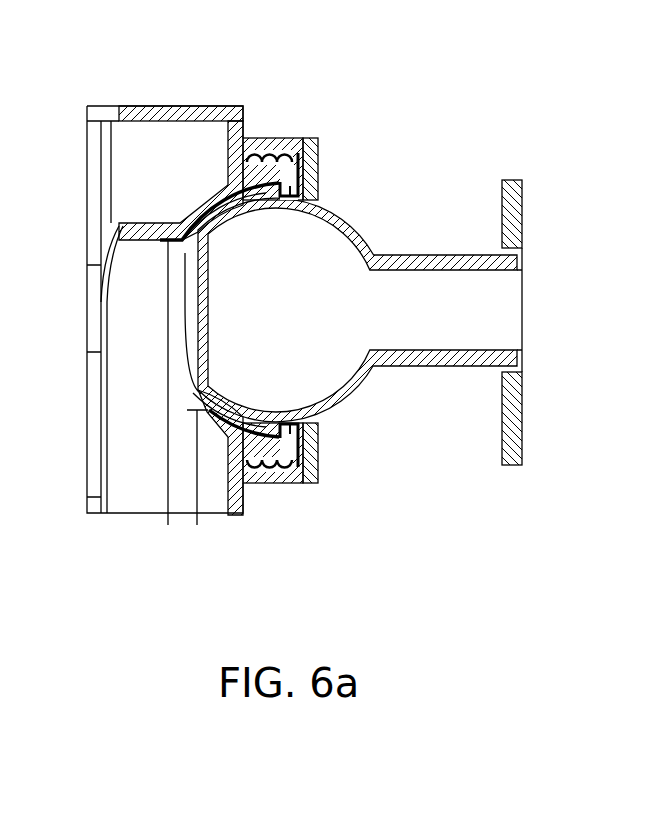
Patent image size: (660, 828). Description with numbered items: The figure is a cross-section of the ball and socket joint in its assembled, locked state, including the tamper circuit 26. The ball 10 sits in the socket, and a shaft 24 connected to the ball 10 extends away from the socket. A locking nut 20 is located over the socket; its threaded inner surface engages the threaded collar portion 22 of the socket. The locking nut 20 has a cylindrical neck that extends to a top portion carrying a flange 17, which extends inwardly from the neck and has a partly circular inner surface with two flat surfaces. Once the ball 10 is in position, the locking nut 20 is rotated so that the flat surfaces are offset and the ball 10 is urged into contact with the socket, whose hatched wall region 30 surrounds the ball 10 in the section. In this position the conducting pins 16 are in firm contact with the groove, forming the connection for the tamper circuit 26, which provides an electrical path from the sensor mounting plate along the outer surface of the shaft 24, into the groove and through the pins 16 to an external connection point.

The ball 10 is at (337, 348).
The seat 30 is at (367, 217).
The shaft 24 is at (485, 298).
The locking nut 20 is at (275, 477).
The flange 17 is at (312, 182).
The threaded collar portion 22 is at (270, 153).
The pins 16 is at (340, 535).
The tamper circuit 26 is at (168, 477).